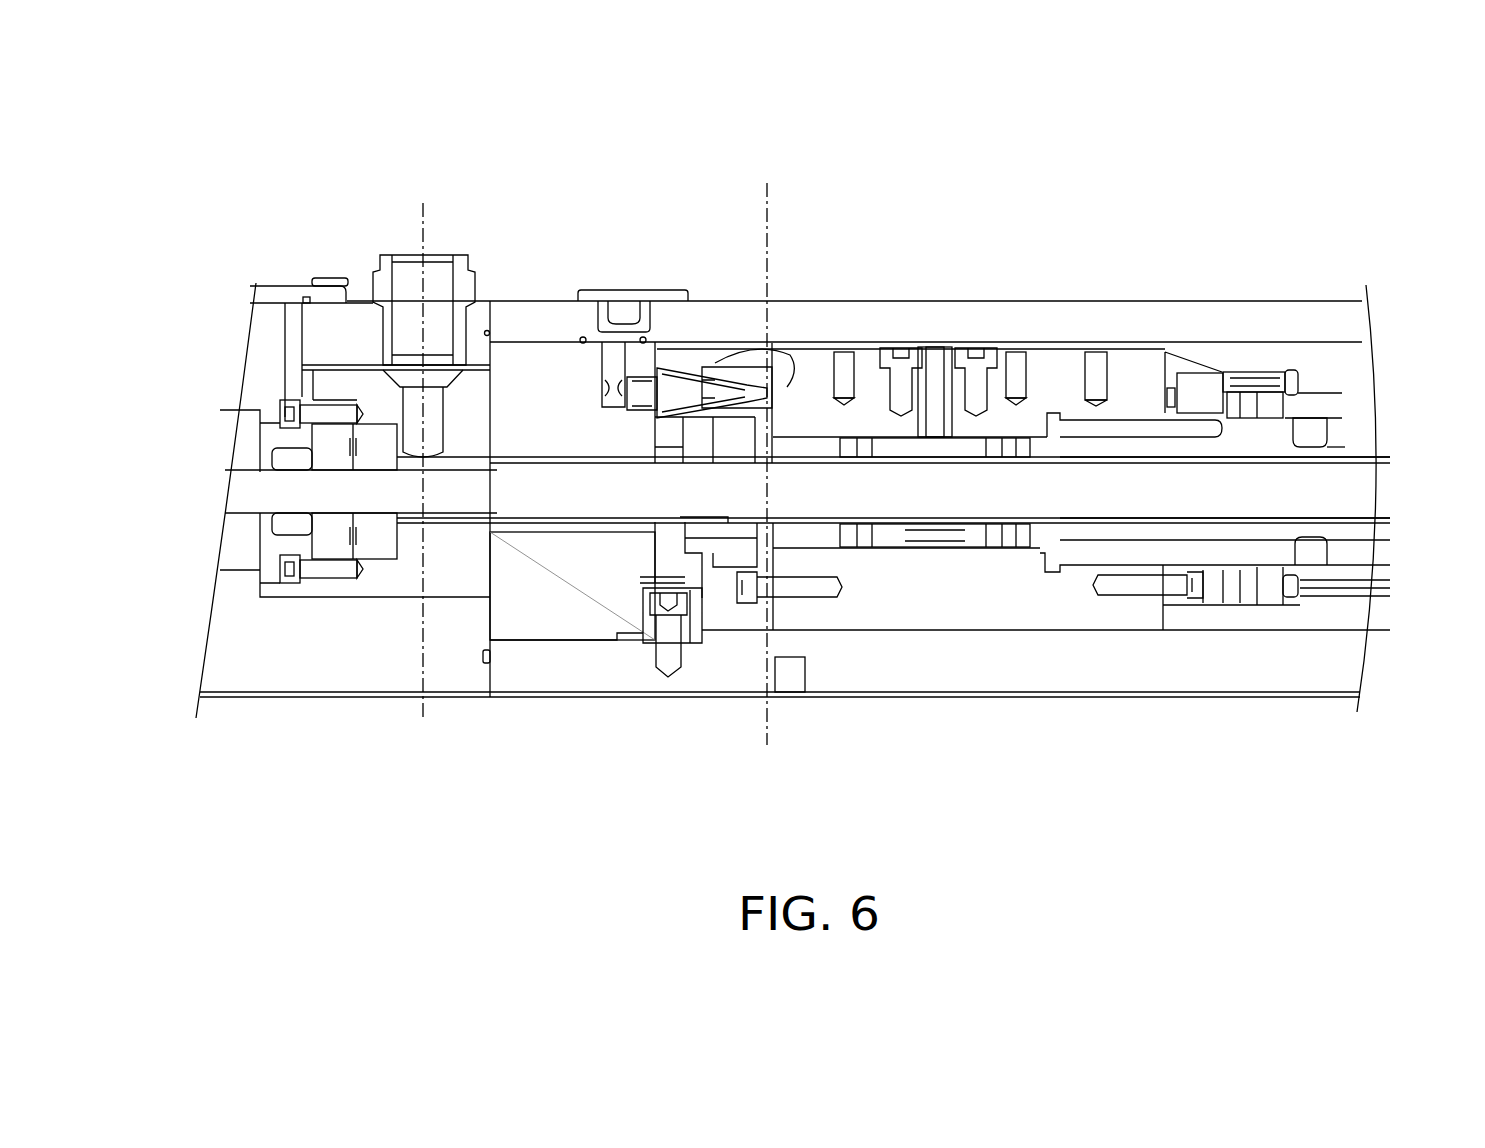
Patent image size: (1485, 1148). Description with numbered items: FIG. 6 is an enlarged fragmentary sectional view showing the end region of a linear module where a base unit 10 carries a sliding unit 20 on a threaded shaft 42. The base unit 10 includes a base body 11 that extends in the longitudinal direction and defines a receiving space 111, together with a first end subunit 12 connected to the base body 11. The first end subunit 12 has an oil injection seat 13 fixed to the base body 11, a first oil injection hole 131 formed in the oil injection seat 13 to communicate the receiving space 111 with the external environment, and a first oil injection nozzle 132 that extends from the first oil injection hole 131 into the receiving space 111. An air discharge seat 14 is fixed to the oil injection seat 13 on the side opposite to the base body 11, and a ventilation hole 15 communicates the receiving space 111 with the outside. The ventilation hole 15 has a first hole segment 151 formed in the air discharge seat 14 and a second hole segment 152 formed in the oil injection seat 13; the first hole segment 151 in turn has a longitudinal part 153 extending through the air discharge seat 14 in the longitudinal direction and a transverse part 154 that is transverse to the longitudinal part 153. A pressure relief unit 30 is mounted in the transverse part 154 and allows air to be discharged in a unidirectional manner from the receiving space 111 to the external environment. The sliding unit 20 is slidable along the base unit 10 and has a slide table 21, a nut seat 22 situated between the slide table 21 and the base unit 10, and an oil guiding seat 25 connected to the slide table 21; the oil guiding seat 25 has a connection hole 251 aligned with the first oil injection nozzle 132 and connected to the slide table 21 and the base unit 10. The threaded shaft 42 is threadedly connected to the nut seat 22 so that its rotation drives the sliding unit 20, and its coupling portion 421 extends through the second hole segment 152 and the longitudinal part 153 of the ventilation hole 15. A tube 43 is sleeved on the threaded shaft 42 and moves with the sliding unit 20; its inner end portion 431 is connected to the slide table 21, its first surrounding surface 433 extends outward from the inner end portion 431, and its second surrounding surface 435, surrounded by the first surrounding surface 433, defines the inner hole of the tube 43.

The base unit 10 is at (795, 574).
The base body 11 is at (1104, 705).
The first end subunit 12 is at (283, 668).
The oil injection seat 13 is at (563, 617).
The air discharge seat 14 is at (455, 413).
The ventilation hole 15 is at (893, 352).
The second hole segment 152 is at (525, 452).
The first hole segment 151 is at (541, 380).
The longitudinal part 153 is at (527, 452).
The transverse part 154 is at (428, 405).
The sliding unit 20 is at (940, 572).
The slide table 21 is at (914, 592).
The nut seat 22 is at (947, 537).
The oil guiding seat 25 is at (758, 362).
The connection hole 251 is at (745, 365).
The pressure relief unit 30 is at (480, 275).
The threaded shaft 42 is at (1075, 490).
The tube 43 is at (1340, 428).
The receiving space 111 is at (1256, 613).
The first oil injection hole 131 is at (613, 360).
The first oil injection nozzle 132 is at (687, 378).
The coupling portion 421 is at (262, 492).
The inner end portion 431 is at (1043, 437).
The first surrounding surface 433 is at (1340, 413).
The second surrounding surface 435 is at (1340, 445).